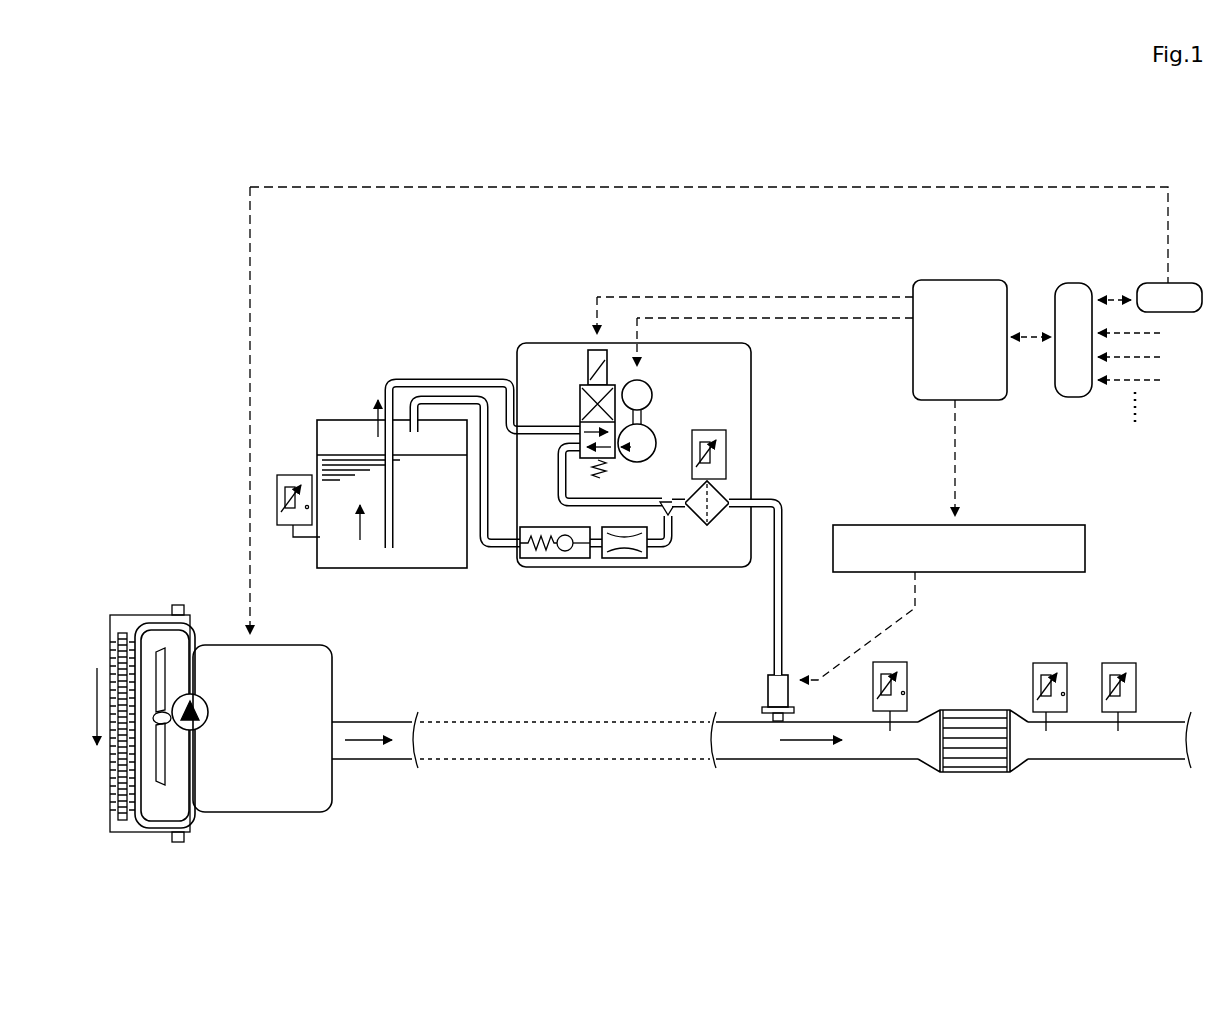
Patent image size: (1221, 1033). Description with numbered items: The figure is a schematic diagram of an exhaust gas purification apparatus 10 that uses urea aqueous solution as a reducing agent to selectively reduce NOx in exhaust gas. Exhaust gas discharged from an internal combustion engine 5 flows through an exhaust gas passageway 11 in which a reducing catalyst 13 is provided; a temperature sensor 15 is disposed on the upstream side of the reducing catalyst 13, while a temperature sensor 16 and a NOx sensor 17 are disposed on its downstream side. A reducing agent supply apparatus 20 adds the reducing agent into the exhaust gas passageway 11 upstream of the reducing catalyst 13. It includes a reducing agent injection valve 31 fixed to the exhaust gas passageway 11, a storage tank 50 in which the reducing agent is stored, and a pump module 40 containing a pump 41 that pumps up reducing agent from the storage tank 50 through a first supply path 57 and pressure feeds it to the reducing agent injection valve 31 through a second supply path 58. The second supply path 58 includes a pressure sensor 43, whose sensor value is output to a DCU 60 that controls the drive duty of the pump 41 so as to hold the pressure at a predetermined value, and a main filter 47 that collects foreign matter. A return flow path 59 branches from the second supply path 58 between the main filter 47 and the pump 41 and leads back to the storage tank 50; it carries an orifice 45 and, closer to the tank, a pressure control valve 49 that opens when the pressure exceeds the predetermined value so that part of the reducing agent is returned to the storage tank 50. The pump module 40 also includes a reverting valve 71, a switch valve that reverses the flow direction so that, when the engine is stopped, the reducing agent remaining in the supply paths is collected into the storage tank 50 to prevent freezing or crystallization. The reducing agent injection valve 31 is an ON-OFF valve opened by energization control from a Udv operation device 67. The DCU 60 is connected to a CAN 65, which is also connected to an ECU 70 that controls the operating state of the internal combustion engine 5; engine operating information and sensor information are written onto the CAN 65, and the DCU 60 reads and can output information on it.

The internal combustion engine 5 is at (332, 790).
The exhaust gas purification apparatus 10 is at (1122, 164).
The exhaust gas passageway 11 is at (817, 762).
The reducing catalyst 13 is at (974, 711).
The temperature sensor 15 is at (908, 667).
The temperature sensor 16 is at (1042, 664).
The NOx sensor 17 is at (1117, 664).
The reducing agent supply apparatus 20 is at (420, 357).
The reducing agent injection valve 31 is at (769, 680).
The pump module 40 is at (592, 568).
The pump 41 is at (655, 436).
The pressure sensor 43 is at (727, 450).
The orifice 45 is at (632, 558).
The main filter 47 is at (722, 496).
The pressure control valve 49 is at (540, 560).
The storage tank 50 is at (378, 568).
The first supply path 57 is at (466, 378).
The second supply path 58 is at (775, 585).
The return flow path 59 is at (484, 546).
The DCU (dosing control unit) 60 is at (824, 398).
The CAN 65 is at (1072, 399).
The Udv operation device (reducing agent injection valve operation device) 67 is at (990, 525).
The ECU (electronic control unit) 70 is at (1183, 285).
The reverting valve 71 is at (609, 383).